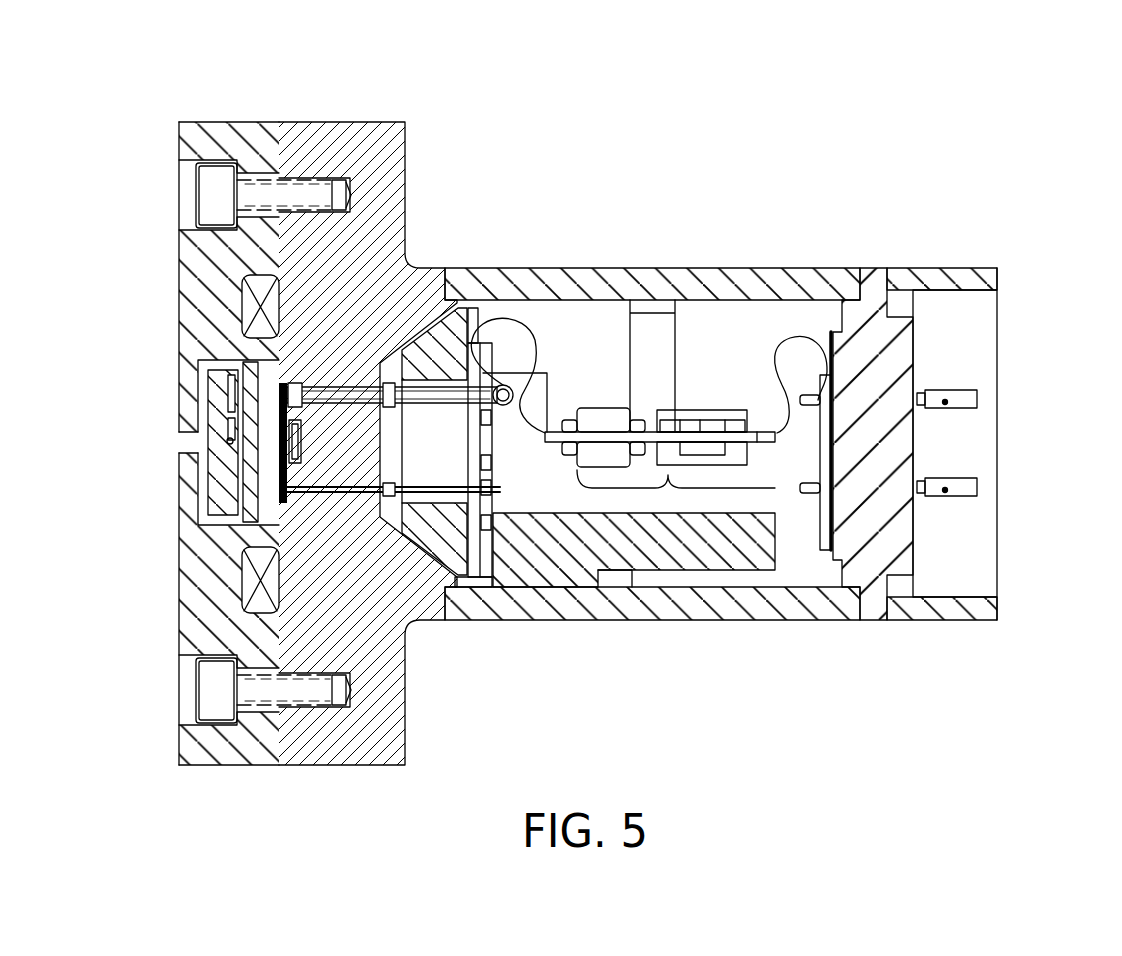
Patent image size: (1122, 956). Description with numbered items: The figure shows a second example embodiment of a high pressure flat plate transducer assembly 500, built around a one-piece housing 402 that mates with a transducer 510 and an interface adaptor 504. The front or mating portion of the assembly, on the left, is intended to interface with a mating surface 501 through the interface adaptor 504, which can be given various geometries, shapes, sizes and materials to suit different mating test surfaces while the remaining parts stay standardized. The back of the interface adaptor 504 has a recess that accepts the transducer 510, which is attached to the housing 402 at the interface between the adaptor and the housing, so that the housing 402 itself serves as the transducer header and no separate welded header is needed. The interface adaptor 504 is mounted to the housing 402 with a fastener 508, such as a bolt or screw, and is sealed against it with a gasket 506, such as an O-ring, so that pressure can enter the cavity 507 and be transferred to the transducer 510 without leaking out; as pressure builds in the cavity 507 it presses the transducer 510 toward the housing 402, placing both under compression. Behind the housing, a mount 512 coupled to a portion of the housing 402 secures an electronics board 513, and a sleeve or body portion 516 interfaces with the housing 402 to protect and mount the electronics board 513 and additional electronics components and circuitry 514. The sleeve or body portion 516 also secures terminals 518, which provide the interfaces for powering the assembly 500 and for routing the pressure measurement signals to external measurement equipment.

The high pressure flat plate transducer assembly 500 is at (646, 92).
The one-piece housing 402 is at (378, 220).
The interface adaptor 504 is at (197, 333).
The gasket 506 is at (243, 298).
The fastener 508 is at (217, 690).
The transducer 510 is at (285, 440).
The cavity 507 is at (168, 438).
The mating surface 501 is at (180, 399).
The mount 512 is at (472, 575).
The electronics board 513 is at (508, 476).
The additional electronics components and circuitry 514 is at (668, 490).
The sleeve or body portion 516 is at (630, 268).
The terminals 518 is at (977, 488).